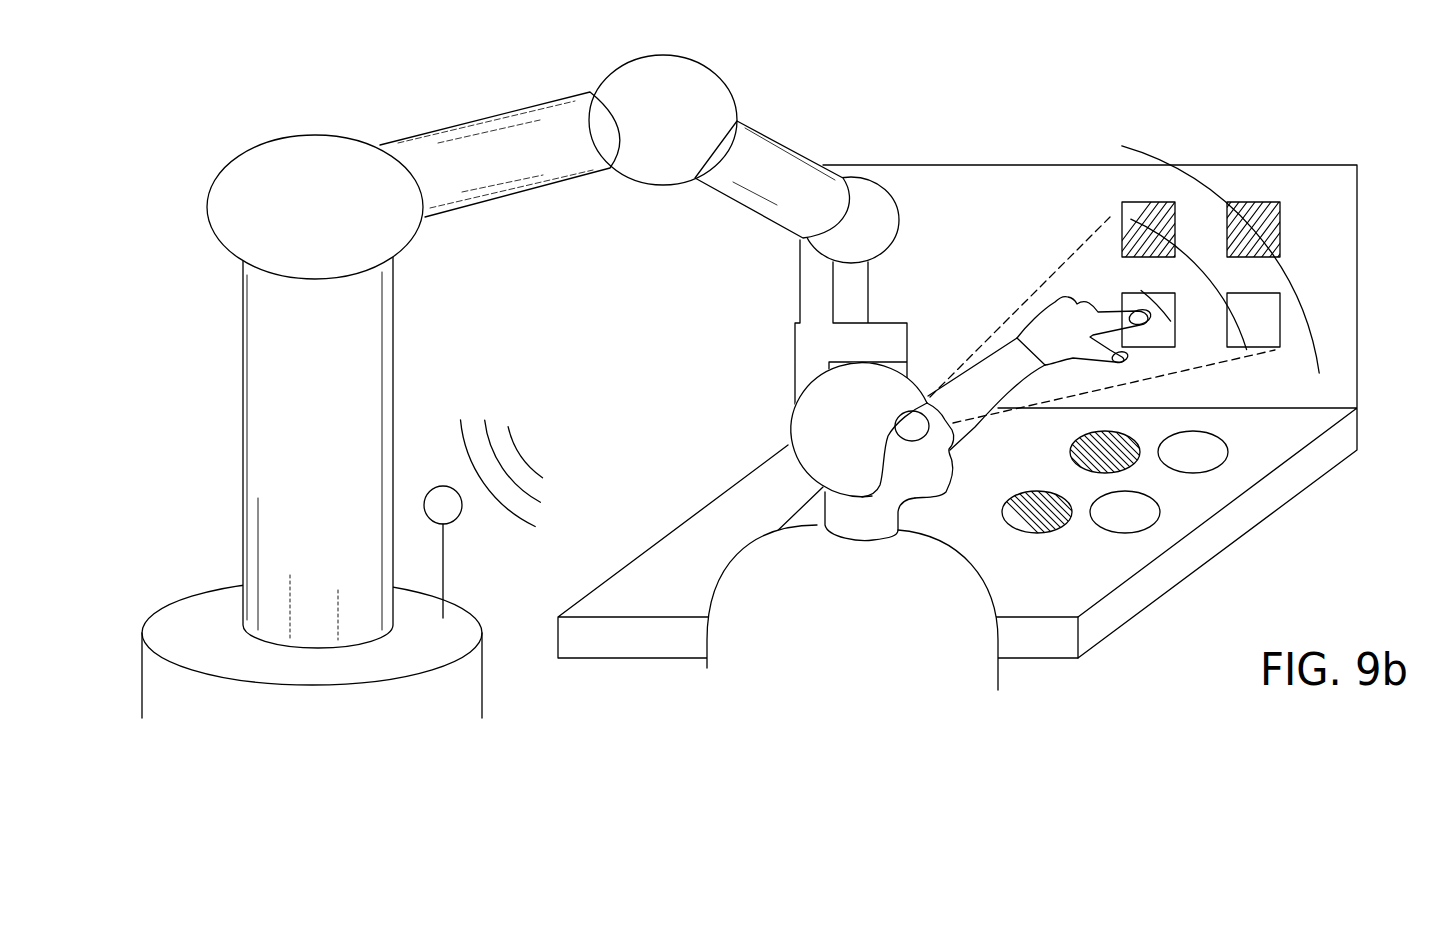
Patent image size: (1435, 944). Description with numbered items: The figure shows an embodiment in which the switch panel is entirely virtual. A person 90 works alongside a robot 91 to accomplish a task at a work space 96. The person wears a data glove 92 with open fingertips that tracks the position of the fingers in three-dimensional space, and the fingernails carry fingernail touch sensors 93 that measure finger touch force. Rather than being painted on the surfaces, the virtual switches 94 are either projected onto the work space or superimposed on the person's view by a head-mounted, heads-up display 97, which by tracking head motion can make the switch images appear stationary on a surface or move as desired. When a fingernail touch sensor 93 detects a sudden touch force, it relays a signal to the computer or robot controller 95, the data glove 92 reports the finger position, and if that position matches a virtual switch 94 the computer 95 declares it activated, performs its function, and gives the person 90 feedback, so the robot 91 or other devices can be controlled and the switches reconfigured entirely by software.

The person 90 is at (977, 591).
The robot 91 is at (504, 114).
The data glove 92 is at (1075, 310).
The fingernail touch sensors 93 is at (1119, 361).
The virtual switches 94 is at (1281, 229).
The computer or robot controller 95 is at (445, 572).
The work space 96 is at (1227, 530).
The head-mounted heads-up display 97 is at (920, 428).